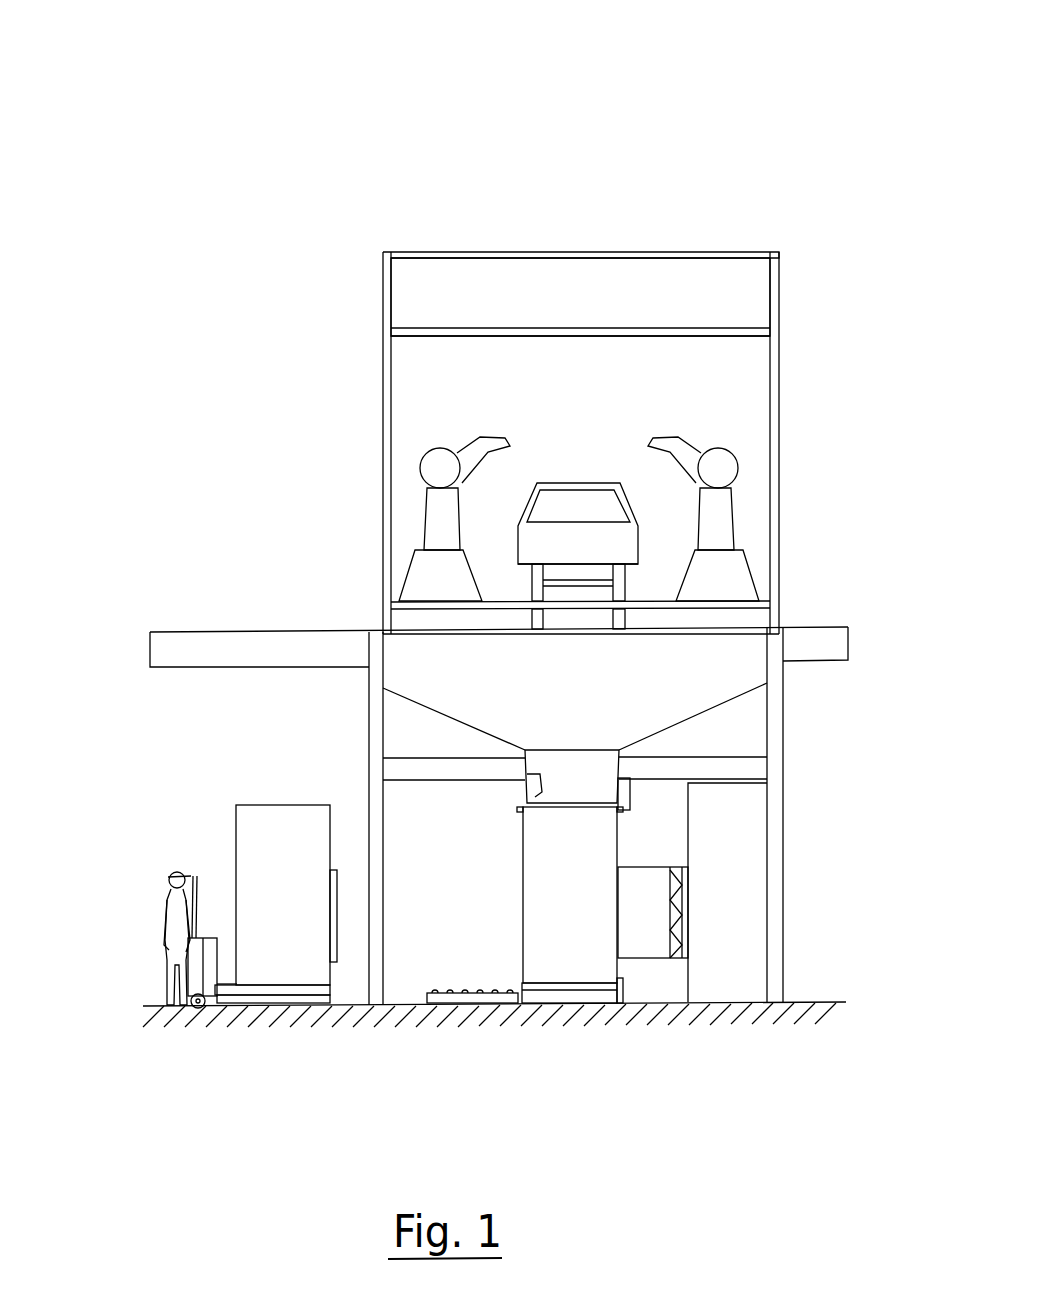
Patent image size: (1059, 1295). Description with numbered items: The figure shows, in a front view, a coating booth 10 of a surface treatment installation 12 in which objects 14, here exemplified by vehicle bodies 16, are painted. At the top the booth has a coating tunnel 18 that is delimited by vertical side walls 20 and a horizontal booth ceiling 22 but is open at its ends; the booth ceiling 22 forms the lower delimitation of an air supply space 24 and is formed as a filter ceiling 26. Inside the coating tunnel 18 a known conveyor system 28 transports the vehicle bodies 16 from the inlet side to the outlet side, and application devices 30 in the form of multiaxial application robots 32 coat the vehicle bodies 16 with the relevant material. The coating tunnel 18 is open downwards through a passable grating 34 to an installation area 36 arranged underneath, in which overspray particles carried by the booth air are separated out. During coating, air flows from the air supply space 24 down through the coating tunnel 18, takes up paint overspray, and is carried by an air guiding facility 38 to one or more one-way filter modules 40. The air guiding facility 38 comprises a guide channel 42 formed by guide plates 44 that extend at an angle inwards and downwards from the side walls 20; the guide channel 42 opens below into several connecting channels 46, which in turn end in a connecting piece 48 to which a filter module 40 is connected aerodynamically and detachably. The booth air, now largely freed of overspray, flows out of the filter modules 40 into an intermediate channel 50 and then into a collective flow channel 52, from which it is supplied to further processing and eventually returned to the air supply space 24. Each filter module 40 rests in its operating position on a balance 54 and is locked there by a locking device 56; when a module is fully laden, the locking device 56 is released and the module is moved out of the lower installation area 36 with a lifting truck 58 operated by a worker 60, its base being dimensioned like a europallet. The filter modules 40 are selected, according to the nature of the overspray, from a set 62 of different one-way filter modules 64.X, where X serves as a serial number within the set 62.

The coating booth 10 is at (415, 240).
The surface treatment installation 12 is at (768, 128).
The objects 14 is at (553, 482).
The vehicle bodies 16 is at (590, 483).
The coating tunnel 18 is at (728, 393).
The side walls 20 is at (385, 495).
The booth ceiling 22 is at (717, 318).
The air supply space 24 is at (598, 250).
The filter ceiling 26 is at (430, 330).
The conveyor system 28 is at (630, 593).
The application devices 30 is at (420, 452).
The application robots 32 is at (432, 537).
The grating 34 is at (420, 604).
The installation area 36 is at (325, 772).
The air guiding facility 38 is at (433, 730).
The filter modules 40 is at (283, 942).
The guide channel 42 is at (683, 668).
The guide plates 44 is at (482, 733).
The connecting channels 46 is at (595, 767).
The connecting piece 48 is at (628, 798).
The intermediate channel 50 is at (657, 935).
The collective flow channel 52 is at (730, 917).
The balance 54 is at (535, 998).
The locking device 56 is at (522, 790).
The lifting truck 58 is at (213, 1008).
The worker 60 is at (160, 970).
The set 62 is at (377, 1058).
The one-way filter modules 64.X is at (263, 835).